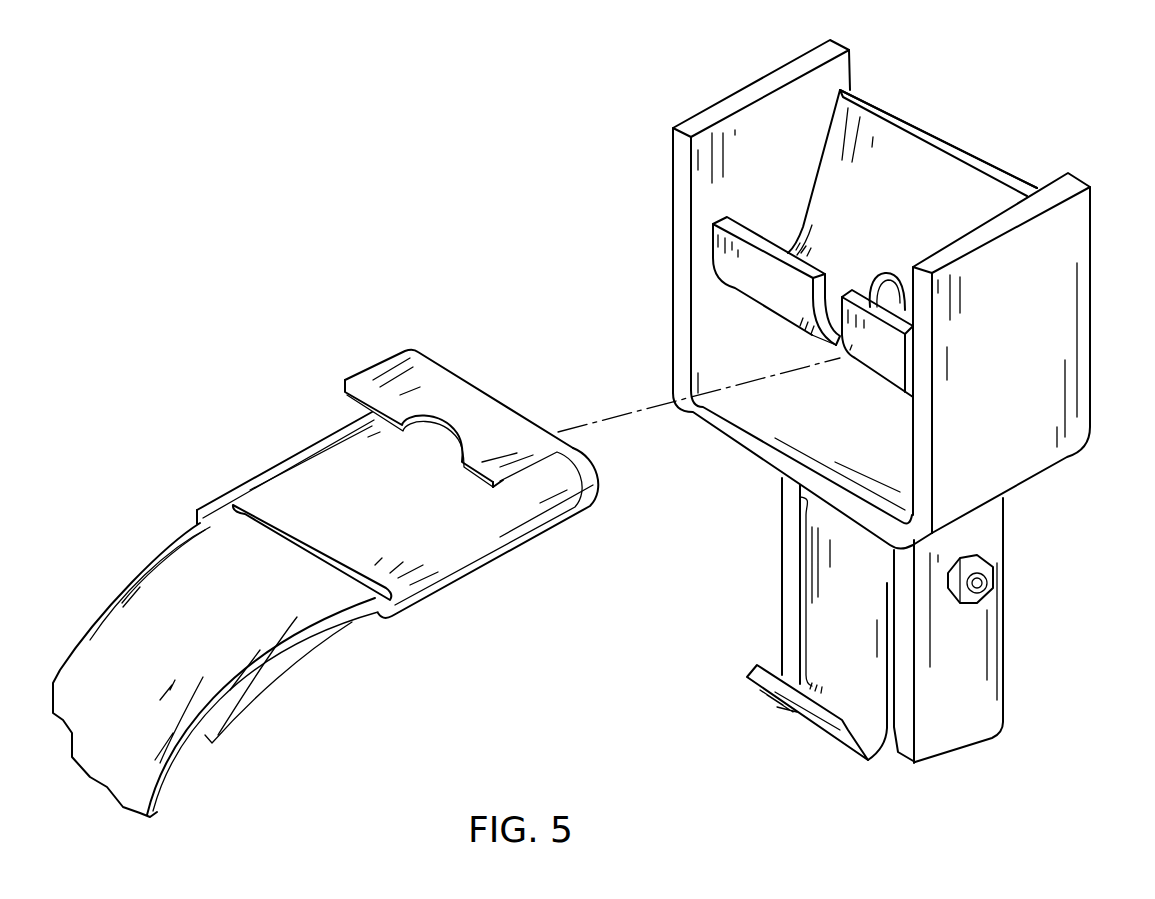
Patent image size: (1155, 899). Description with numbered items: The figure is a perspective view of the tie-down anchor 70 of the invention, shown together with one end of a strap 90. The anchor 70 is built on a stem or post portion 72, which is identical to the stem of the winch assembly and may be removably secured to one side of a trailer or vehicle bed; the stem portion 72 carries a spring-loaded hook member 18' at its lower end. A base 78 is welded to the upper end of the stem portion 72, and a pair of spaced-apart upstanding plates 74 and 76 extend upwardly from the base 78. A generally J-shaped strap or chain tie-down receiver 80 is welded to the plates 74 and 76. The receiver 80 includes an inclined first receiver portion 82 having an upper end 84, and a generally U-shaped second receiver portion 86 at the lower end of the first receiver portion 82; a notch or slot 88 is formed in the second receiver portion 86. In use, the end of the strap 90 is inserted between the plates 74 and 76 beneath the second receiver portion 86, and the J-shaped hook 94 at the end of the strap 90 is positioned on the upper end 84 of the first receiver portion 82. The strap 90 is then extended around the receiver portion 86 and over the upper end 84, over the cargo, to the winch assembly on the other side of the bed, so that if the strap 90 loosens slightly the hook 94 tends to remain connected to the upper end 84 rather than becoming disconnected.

The anchor 70 is at (955, 106).
The stem or post portion 72 is at (983, 637).
The upstanding plate 74 is at (1002, 373).
The upstanding plate 76 is at (675, 213).
The base 78 is at (822, 433).
The strap or chain tie-down receiver 80 is at (1013, 161).
The first receiver portion 82 is at (914, 214).
The upper end 84 is at (882, 110).
The second receiver portion 86 is at (750, 296).
The notch or slot 88 is at (700, 393).
The spring-loaded hook member 18' is at (842, 756).
The strap 90 is at (165, 542).
The J-shaped hook 94 is at (444, 373).